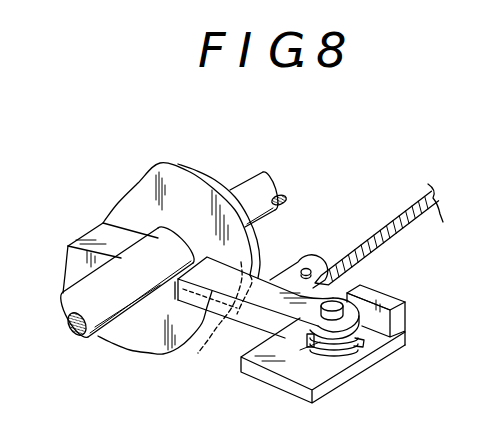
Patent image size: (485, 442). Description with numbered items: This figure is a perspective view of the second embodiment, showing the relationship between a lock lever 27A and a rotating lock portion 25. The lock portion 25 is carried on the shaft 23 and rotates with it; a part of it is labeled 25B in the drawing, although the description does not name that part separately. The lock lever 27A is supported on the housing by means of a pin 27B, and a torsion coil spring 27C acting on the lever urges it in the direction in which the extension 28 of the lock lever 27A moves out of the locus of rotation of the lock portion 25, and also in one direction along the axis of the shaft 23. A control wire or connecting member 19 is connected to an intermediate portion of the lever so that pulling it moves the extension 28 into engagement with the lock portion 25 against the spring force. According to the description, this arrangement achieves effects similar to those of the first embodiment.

The control wire or connecting member 19 is at (381, 231).
The shaft 23 is at (70, 288).
The lock portion 25 is at (121, 349).
The cam step portion 25B is at (208, 335).
The lock lever 27A is at (240, 322).
The pin 27B is at (361, 285).
The torsion coil spring 27C is at (360, 350).
The extension 28 is at (256, 277).